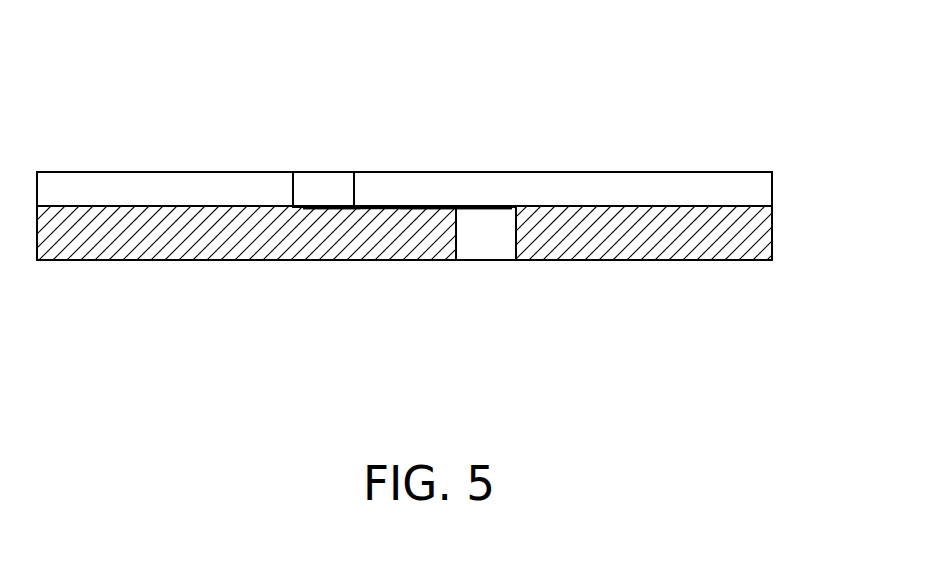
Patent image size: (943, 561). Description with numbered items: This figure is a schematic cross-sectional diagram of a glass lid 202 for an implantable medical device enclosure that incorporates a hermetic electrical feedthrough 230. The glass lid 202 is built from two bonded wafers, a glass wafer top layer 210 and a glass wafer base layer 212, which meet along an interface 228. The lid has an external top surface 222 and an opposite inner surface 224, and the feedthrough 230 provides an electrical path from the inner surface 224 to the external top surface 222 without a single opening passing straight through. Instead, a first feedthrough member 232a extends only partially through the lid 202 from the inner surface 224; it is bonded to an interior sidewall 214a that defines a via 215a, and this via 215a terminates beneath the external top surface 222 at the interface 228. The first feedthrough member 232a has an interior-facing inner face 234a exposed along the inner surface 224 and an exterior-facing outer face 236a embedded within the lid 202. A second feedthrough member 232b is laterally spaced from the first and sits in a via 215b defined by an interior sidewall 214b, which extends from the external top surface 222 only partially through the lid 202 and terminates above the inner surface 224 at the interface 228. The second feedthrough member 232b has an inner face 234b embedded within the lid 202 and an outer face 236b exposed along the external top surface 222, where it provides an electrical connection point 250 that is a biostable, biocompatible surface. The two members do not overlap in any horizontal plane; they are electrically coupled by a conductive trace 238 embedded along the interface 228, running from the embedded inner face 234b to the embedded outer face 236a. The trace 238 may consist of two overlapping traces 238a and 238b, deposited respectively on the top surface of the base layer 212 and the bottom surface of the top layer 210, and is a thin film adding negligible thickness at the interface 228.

The glass lid 202 is at (787, 172).
The glass wafer top layer 210 is at (502, 183).
The glass wafer base layer 212 is at (657, 252).
The external top surface 222 is at (100, 172).
The inner surface 224 is at (140, 262).
The interface 228 is at (124, 206).
The interior sidewall 214a is at (455, 232).
The interior sidewall 214b is at (292, 192).
The first feedthrough member 232a is at (472, 250).
The second feedthrough member 232b is at (338, 193).
The outer face 236a is at (513, 207).
The outer face 236b is at (313, 172).
The inner face 234a is at (508, 262).
The inner face 234b is at (294, 210).
The conductive trace 238 is at (393, 222).
The trace 238a is at (367, 210).
The trace 238b is at (412, 205).
The via 215a is at (495, 293).
The via 215b is at (338, 138).
The hermetic electrical feedthrough 230 is at (444, 76).
The electrical connection point 250 is at (357, 103).